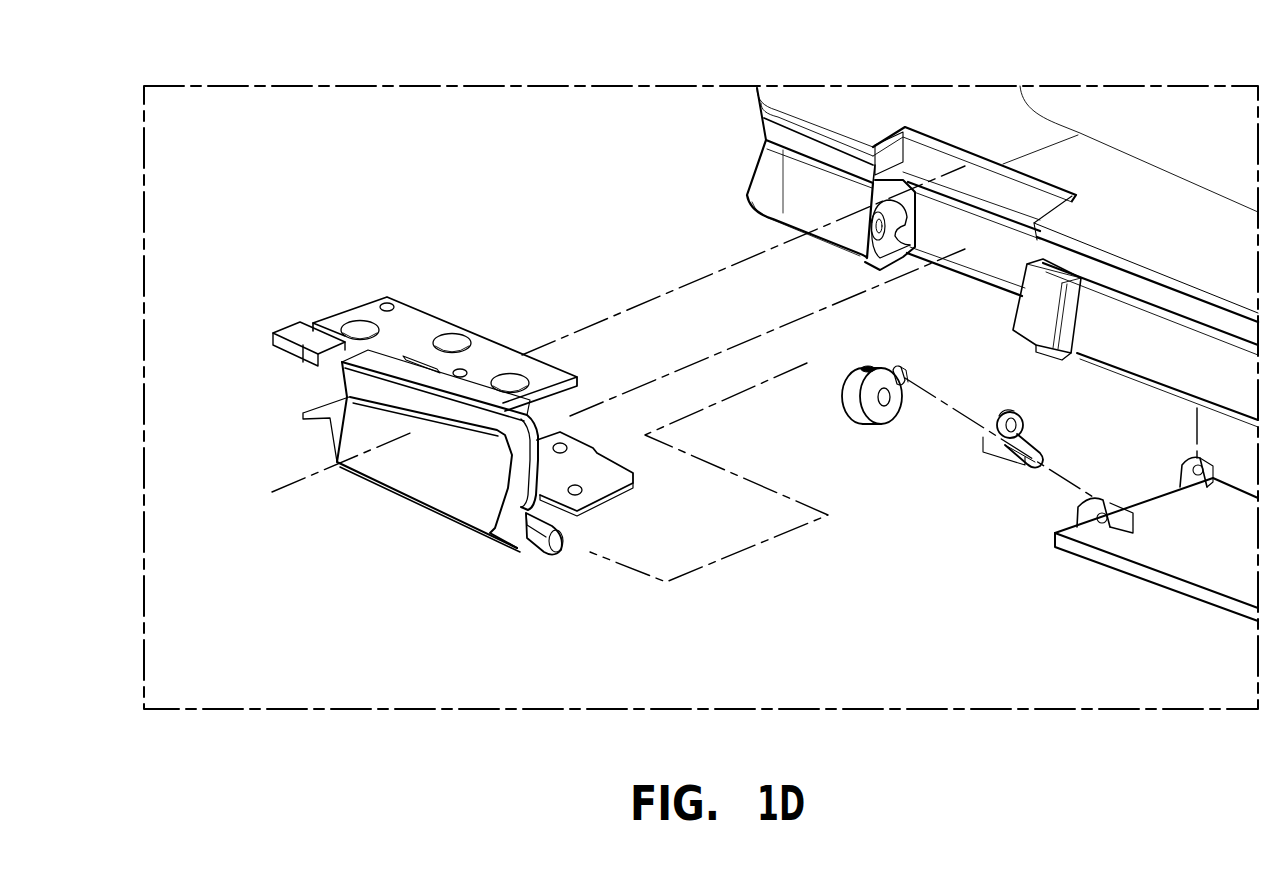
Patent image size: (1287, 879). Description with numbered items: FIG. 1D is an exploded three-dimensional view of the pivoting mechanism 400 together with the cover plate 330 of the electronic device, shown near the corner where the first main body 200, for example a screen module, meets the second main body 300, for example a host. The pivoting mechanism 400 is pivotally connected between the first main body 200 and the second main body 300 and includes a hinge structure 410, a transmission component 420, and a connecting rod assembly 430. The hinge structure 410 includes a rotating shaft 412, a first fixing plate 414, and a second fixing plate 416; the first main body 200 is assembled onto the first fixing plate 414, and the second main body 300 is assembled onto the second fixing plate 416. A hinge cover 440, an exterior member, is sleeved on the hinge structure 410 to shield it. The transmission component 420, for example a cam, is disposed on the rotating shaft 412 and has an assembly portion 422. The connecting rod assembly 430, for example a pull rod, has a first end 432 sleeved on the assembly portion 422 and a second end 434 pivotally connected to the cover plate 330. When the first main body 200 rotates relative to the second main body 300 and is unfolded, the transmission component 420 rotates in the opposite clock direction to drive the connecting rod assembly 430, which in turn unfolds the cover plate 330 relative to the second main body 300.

The first main body 200 is at (827, 100).
The second main body 300 is at (765, 180).
The cover plate 330 is at (1158, 567).
The pivoting mechanism 400 is at (677, 424).
The hinge structure 410 is at (431, 424).
The rotating shaft 412 is at (541, 540).
The first fixing plate 414 is at (426, 323).
The second fixing plate 416 is at (612, 481).
The transmission component 420 is at (888, 396).
The assembly portion 422 is at (904, 372).
The connecting rod assembly 430 is at (1066, 437).
The first end 432 is at (990, 410).
The second end 434 is at (1005, 450).
The hinge cover 440 is at (415, 477).